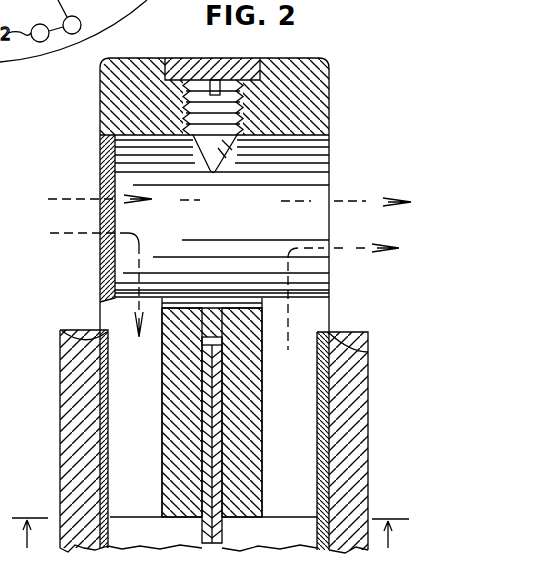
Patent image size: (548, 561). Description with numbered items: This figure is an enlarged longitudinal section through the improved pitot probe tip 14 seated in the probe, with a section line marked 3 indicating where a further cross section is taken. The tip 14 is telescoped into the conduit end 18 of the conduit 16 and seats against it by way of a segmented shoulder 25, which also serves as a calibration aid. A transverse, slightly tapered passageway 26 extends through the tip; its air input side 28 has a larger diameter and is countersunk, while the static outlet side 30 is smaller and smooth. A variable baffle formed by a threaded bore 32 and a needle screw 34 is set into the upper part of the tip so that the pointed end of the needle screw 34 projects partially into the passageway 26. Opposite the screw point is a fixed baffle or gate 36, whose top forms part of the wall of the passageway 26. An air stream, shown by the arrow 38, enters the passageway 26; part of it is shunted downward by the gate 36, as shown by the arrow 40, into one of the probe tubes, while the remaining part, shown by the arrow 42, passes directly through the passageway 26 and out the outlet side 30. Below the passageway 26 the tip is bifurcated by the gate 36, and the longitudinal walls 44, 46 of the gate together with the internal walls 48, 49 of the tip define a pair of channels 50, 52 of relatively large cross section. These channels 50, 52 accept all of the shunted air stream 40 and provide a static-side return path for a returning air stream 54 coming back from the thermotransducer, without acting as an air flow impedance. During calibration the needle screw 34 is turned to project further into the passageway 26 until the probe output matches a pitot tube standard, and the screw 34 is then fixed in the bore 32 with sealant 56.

The pitot probe tip 14 is at (341, 108).
The conduit 16 is at (213, 424).
The conduit end 18 is at (346, 332).
The segmented shoulder 25 is at (70, 332).
The passageway 26 is at (232, 229).
The air input side 28 is at (118, 172).
The static outlet side 30 is at (329, 165).
The threaded bore 32 is at (187, 103).
The needle screw 34 is at (243, 98).
The gate 36 is at (244, 334).
The air stream 38 is at (109, 199).
The shunted air stream 40 is at (81, 280).
The remaining air stream 42 is at (349, 202).
The longitudinal wall of gate 44 is at (168, 447).
The longitudinal wall of gate 46 is at (257, 447).
The internal wall of probe tip 48 is at (120, 476).
The internal wall of probe tip 49 is at (307, 457).
The channel 50 is at (146, 400).
The channel 52 is at (302, 400).
The returning air stream 54 is at (342, 250).
The sealant 56 is at (247, 58).
The section line 3- 3 is at (210, 539).